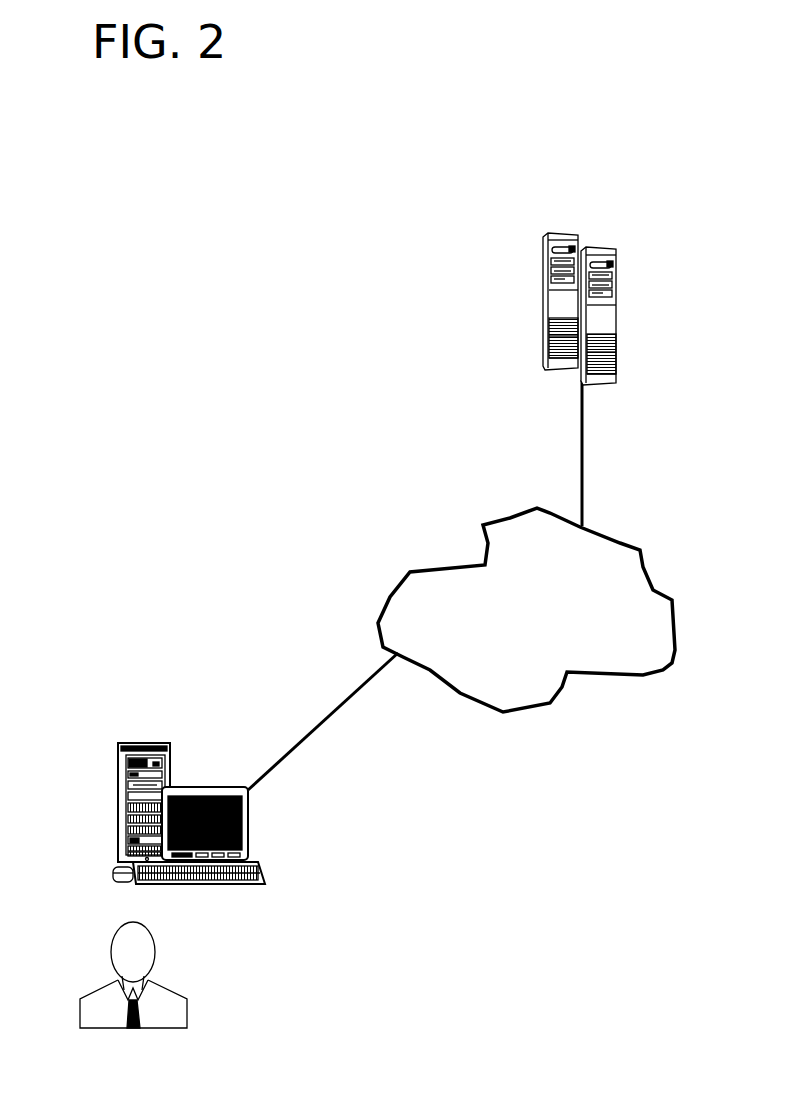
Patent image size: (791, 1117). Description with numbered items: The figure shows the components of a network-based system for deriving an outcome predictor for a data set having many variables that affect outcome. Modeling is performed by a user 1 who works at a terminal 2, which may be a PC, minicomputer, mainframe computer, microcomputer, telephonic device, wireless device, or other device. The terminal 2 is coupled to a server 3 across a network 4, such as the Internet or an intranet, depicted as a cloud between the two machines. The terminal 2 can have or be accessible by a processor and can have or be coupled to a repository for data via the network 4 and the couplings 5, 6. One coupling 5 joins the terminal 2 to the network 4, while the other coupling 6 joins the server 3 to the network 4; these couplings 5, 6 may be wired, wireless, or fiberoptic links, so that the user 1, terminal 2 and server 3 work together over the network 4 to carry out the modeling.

The user 1 is at (103, 987).
The terminal 2 is at (128, 755).
The server 3 is at (611, 250).
The network 4 is at (483, 550).
The coupling 5 is at (327, 718).
The coupling 6 is at (580, 440).